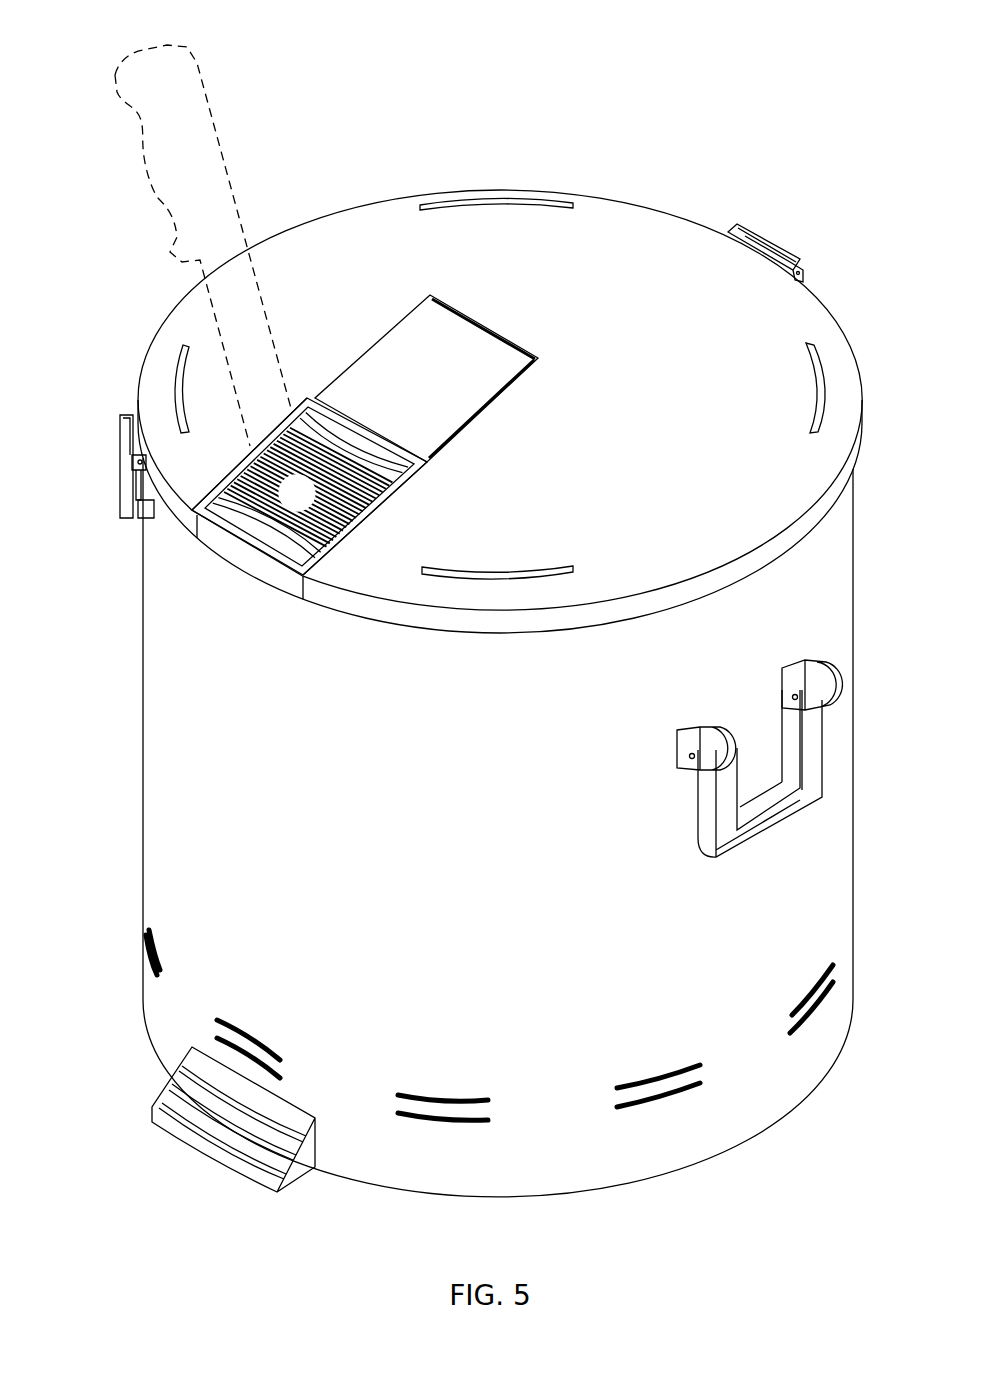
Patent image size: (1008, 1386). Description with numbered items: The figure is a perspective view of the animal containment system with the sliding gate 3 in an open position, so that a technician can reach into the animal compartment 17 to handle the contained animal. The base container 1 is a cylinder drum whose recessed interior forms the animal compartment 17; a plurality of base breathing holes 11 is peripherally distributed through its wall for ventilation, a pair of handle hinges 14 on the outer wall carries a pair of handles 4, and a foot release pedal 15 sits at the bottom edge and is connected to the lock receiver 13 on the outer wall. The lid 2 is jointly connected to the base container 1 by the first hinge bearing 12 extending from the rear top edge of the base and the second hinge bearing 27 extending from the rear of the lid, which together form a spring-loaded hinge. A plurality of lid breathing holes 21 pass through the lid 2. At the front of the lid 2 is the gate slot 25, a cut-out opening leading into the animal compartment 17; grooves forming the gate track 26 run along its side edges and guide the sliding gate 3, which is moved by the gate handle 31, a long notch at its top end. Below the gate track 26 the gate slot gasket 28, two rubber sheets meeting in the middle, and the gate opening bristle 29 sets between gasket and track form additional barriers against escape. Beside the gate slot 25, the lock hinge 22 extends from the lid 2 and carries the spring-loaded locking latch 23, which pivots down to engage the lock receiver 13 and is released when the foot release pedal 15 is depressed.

The base container 1 is at (155, 695).
The lid 2 is at (305, 248).
The sliding gate 3 is at (476, 400).
The pair of handles 4 is at (705, 830).
The plurality of base breathing holes 11 is at (150, 952).
The first hinge bearing 12 is at (795, 251).
The lock receiver 13 is at (150, 520).
The pair of handle hinges 14 is at (808, 668).
The foot release pedal 15 is at (150, 1117).
The animal compartment 17 is at (250, 550).
The plurality of lid breathing holes 21 is at (497, 207).
The lock hinge 22 is at (126, 416).
The locking latch 23 is at (118, 455).
The gate slot 25 is at (306, 400).
The gate track 26 is at (232, 462).
The second hinge bearing 27 is at (765, 232).
The gate slot gasket 28 is at (232, 522).
The gate opening bristle 29 is at (333, 428).
The gate handle 31 is at (476, 330).